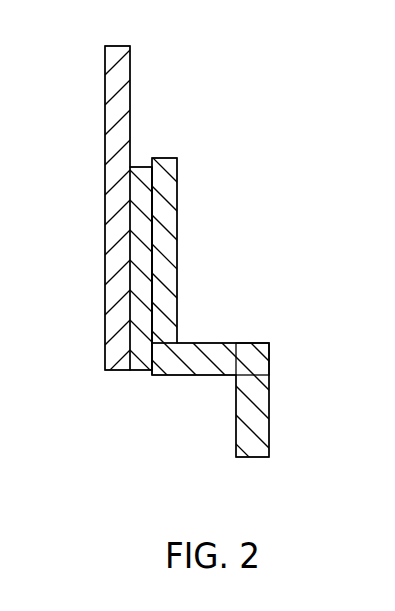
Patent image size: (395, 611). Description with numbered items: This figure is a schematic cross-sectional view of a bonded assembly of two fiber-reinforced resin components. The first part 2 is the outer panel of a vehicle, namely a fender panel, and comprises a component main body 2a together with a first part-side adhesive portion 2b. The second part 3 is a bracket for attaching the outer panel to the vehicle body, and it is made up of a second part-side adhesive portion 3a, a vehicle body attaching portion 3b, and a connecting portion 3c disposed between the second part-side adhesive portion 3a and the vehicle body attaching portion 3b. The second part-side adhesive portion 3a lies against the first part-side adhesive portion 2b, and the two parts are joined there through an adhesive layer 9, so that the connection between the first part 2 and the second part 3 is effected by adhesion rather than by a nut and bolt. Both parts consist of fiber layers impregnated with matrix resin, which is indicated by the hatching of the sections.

The first part 2 is at (88, 202).
The component main body 2a is at (118, 121).
The first part-side adhesive portion 2b is at (118, 262).
The second part 3 is at (240, 346).
The second part-side adhesive portion 3a is at (168, 250).
The vehicle body attaching portion 3b is at (262, 425).
The connecting portion 3c is at (213, 357).
The adhesive layer 9 is at (141, 360).